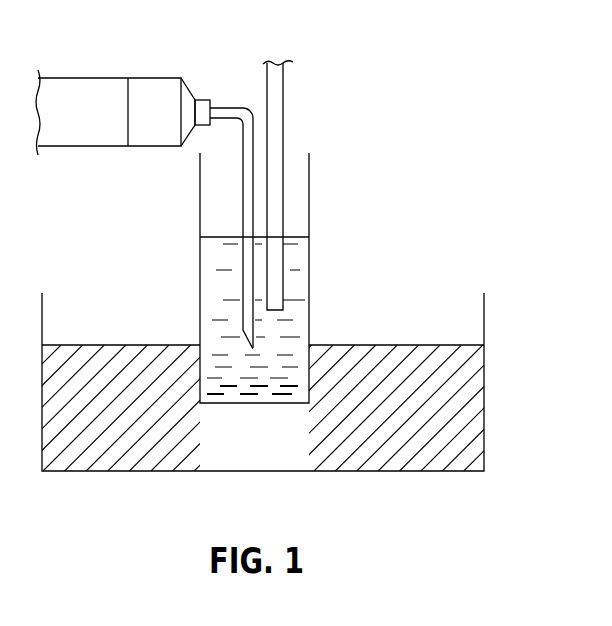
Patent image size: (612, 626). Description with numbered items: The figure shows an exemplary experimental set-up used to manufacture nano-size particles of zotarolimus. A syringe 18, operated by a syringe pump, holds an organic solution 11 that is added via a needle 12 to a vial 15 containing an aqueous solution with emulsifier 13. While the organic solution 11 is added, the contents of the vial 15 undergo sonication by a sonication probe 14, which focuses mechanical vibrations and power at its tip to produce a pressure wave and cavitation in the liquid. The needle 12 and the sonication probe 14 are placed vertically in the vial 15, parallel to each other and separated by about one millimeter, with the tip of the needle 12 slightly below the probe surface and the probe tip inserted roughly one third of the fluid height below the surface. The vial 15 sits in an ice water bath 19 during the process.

The organic solution 11 is at (158, 85).
The needle 12 is at (242, 200).
The aqueous solution with emulsifier 13 is at (288, 342).
The sonication probe 14 is at (304, 96).
The vial 15 is at (323, 185).
The syringe 18 is at (82, 85).
The ice water bath 19 is at (468, 405).